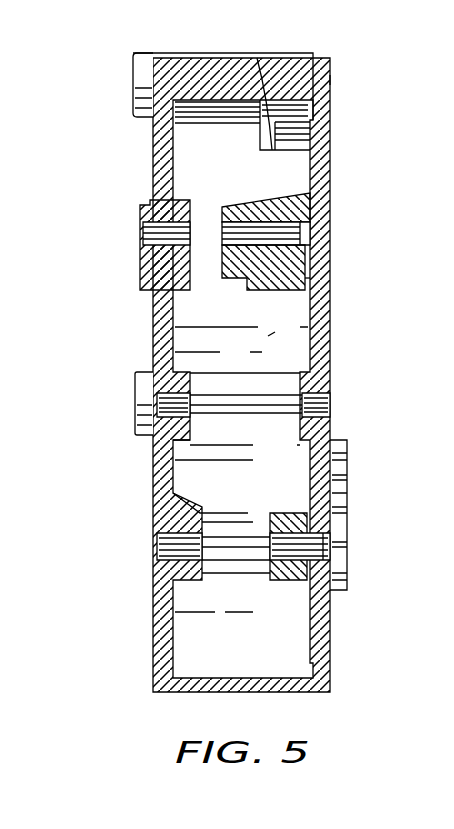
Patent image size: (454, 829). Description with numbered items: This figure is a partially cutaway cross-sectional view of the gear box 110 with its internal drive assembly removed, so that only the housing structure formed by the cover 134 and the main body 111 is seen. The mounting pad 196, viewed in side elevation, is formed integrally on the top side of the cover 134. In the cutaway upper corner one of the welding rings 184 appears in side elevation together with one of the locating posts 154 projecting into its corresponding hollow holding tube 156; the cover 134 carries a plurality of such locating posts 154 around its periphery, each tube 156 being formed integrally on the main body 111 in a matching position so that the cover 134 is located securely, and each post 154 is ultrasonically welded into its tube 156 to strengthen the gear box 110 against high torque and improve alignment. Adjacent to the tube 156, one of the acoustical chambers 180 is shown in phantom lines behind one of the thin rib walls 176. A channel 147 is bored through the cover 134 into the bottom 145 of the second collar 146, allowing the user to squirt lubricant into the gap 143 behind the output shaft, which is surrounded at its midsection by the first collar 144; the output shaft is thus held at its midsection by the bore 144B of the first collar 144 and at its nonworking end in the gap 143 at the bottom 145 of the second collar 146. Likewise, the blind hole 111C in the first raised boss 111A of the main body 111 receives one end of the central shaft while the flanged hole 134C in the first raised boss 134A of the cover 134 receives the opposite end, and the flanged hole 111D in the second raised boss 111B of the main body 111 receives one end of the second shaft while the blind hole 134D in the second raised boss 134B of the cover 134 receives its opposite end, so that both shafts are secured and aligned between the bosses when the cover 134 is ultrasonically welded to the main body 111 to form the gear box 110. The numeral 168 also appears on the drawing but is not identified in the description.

The gear box 110 is at (123, 627).
The main body 111 is at (177, 692).
The first raised boss 111A is at (177, 443).
The second raised boss 111B is at (197, 507).
The blind hole 111C is at (167, 410).
The flanged hole 111D is at (173, 553).
The cover 134 is at (333, 333).
The first raised boss 134A is at (305, 367).
The second raised boss 134B is at (290, 510).
The flanged hole 134C is at (320, 403).
The blind hole 134D is at (283, 560).
The gap 143 is at (278, 253).
The first collar 144 is at (150, 295).
The bore 144B is at (165, 270).
The bottom 145 is at (332, 267).
The second collar 146 is at (253, 197).
The channel 147 is at (330, 242).
The locating post 154 is at (297, 120).
The hollow holding tube 156 is at (268, 112).
The cap 168 is at (140, 56).
The thin rib wall 176 is at (203, 103).
The acoustical chamber 180 is at (207, 70).
The welding ring 184 is at (331, 80).
The mounting pad 196 is at (352, 520).